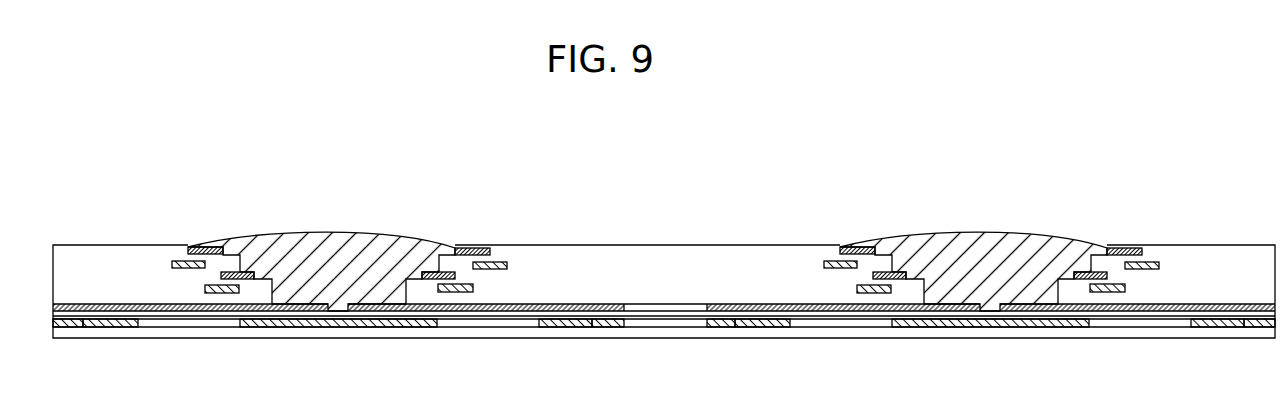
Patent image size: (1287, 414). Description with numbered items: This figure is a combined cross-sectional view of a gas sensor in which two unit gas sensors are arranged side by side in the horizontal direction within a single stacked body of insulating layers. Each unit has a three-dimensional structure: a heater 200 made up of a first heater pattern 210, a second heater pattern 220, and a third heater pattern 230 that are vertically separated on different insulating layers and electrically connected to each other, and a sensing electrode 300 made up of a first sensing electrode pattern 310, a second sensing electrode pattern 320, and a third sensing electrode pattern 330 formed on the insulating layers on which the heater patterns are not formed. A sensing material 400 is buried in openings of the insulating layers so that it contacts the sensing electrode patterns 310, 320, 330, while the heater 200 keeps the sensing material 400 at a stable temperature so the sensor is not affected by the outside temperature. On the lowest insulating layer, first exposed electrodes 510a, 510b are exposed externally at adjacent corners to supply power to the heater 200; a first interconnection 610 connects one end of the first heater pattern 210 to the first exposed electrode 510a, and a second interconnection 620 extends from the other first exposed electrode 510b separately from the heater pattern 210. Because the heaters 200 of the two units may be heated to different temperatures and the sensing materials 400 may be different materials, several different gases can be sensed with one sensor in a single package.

The heater 200 is at (524, 176).
The first heater pattern 210 is at (415, 326).
The second heater pattern 220 is at (463, 285).
The third heater pattern 230 is at (503, 262).
The sensing electrode 300 is at (152, 176).
The first sensing electrode pattern 310 is at (262, 304).
The second sensing electrode pattern 320 is at (248, 278).
The third sensing electrode pattern 330 is at (198, 246).
The sensing material 400 is at (338, 246).
The first exposed electrode 510a is at (608, 327).
The first exposed electrode 510b is at (73, 327).
The first interconnection 610 is at (559, 327).
The second interconnection 620 is at (128, 327).